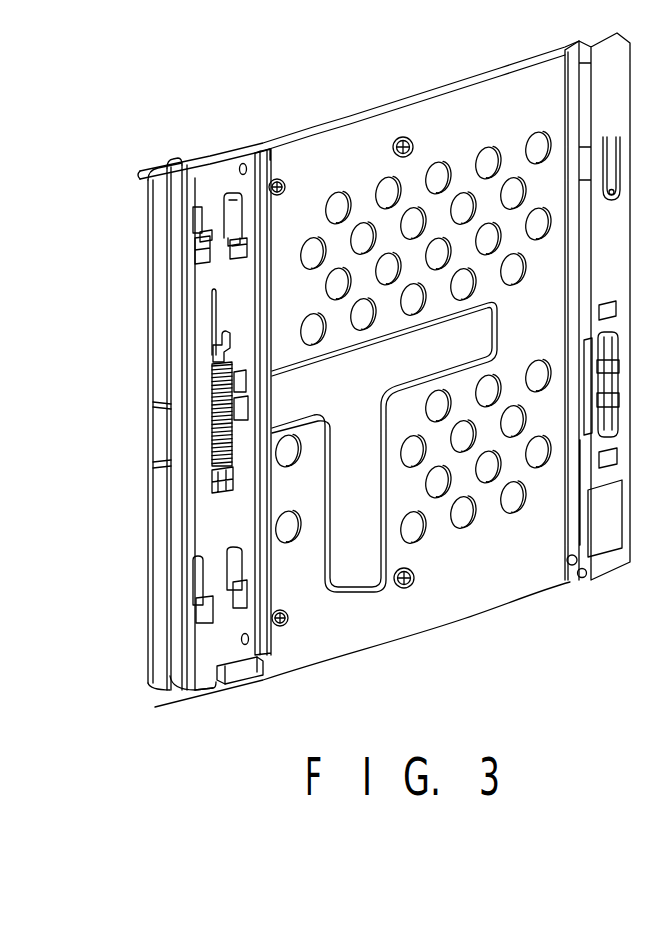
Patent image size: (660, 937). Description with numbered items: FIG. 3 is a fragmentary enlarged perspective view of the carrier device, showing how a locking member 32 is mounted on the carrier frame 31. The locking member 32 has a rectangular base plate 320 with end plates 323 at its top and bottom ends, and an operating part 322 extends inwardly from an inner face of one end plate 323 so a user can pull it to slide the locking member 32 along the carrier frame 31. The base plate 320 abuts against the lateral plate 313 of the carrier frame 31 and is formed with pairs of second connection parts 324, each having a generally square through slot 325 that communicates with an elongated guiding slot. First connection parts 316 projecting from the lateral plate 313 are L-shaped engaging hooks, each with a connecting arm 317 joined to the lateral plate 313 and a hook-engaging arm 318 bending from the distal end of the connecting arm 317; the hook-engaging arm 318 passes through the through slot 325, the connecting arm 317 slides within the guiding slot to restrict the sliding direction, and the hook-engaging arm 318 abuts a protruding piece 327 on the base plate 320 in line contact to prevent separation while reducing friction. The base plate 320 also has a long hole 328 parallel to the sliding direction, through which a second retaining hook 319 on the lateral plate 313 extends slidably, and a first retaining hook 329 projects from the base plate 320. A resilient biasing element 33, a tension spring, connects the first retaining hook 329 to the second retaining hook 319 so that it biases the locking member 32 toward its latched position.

The carrier frame 31 is at (148, 543).
The locking member 32 is at (283, 327).
The resilient biasing element 33 is at (222, 420).
The lateral plate 313 is at (290, 163).
The first connection part 316 is at (210, 236).
The connecting arm 317 is at (197, 256).
The hook-engaging arm 318 is at (210, 258).
The second retaining hook 319 is at (222, 348).
The base plate 320 is at (209, 178).
The operating part 322 is at (250, 676).
The end plate 323 is at (212, 680).
The second connection part 324 is at (199, 198).
The through slot 325 is at (235, 210).
The protruding piece 327 is at (232, 258).
The long hole 328 is at (212, 302).
The first retaining hook 329 is at (222, 478).